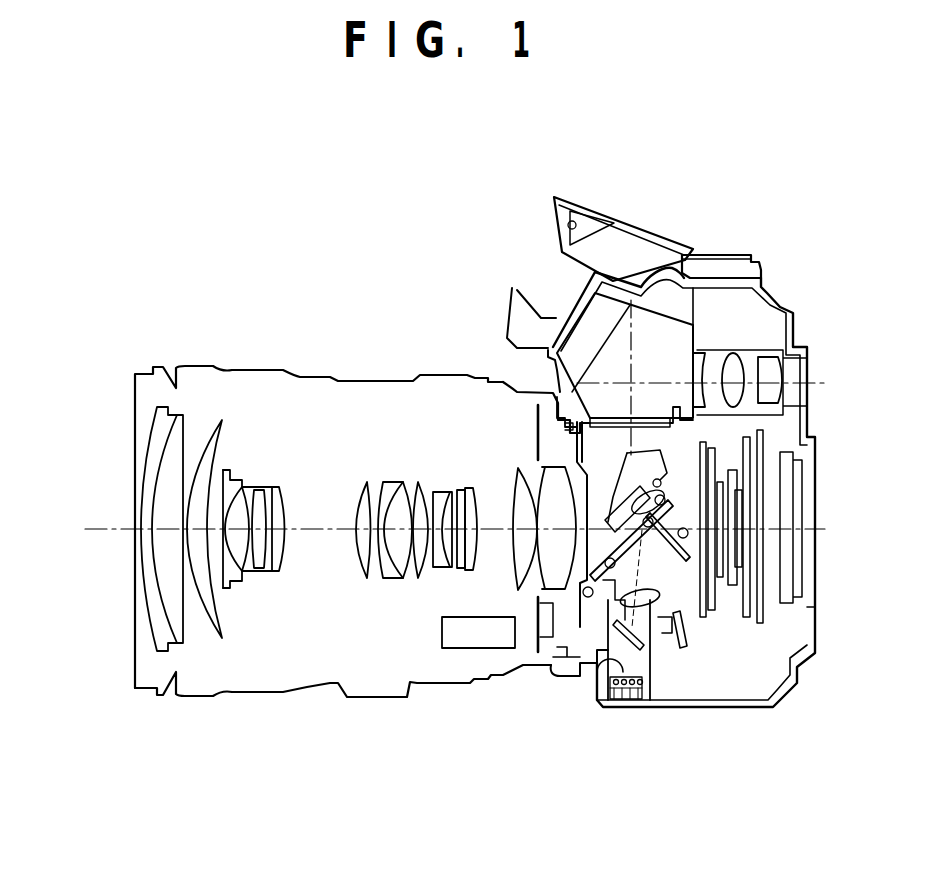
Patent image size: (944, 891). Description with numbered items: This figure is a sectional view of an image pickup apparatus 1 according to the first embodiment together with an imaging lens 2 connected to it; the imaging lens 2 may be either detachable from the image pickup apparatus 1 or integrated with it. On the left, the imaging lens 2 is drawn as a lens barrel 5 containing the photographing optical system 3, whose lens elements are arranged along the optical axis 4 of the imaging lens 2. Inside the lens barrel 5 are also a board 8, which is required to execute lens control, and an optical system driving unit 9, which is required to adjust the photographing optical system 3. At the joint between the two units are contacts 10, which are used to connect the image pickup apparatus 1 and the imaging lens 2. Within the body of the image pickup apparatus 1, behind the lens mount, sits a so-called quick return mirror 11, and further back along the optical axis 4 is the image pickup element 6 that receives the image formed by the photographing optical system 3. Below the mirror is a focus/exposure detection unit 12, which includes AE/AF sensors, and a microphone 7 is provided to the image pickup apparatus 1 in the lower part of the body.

The image pickup apparatus 1 is at (736, 243).
The imaging lens 2 is at (318, 368).
The photographing optical system 3 is at (253, 588).
The optical axis 4 is at (100, 528).
The lens barrel 5 is at (187, 366).
The image pickup element 6 is at (736, 585).
The microphone 7 is at (608, 650).
The board 8 is at (537, 443).
The optical system driving unit 9 is at (479, 643).
The contacts 10 is at (578, 658).
The quick return mirror 11 is at (648, 578).
The focus/exposure detection unit 12 is at (665, 647).